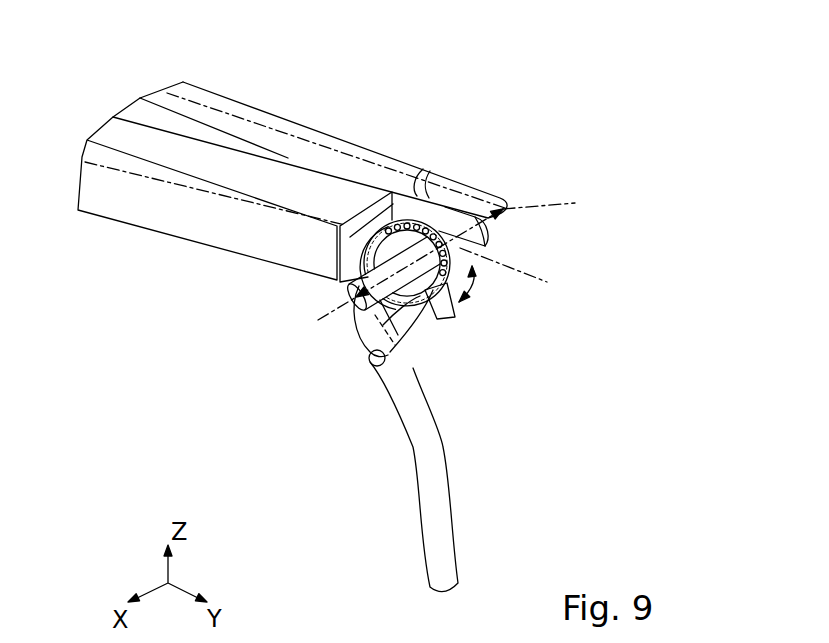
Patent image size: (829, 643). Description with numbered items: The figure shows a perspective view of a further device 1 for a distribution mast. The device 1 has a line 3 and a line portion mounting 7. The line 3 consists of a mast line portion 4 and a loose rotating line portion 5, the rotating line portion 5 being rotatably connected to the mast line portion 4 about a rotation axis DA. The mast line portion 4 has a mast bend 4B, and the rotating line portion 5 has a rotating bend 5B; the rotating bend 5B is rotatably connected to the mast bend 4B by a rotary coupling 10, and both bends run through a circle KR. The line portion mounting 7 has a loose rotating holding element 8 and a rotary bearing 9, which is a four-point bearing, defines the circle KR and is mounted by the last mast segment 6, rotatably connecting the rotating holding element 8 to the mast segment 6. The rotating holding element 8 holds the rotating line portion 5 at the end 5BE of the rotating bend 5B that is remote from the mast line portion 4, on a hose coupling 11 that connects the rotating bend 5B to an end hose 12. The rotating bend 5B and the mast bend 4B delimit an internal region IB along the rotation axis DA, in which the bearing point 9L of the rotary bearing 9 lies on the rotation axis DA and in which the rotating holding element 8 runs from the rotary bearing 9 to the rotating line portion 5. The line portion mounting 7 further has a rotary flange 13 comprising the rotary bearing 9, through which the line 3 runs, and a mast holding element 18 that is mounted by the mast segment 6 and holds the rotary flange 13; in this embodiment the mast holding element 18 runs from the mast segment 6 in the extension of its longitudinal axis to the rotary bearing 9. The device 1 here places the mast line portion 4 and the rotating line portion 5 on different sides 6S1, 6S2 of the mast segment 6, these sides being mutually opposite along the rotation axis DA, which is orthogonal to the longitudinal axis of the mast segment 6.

The device 1 is at (600, 129).
The line 3 is at (252, 121).
The mast line portion 4 is at (197, 99).
The mast bend 4B is at (501, 201).
The rotating line portion 5 is at (447, 530).
The rotating bend 5B is at (362, 322).
The end of the rotating bend 5BE is at (360, 378).
The mast segment 6 is at (147, 207).
The side of the mast segment 6S1 is at (195, 222).
The side of the mast segment 6S2 is at (279, 153).
The line portion mounting 7 is at (349, 245).
The rotating holding element 8 is at (440, 320).
The rotary bearing 9 is at (423, 222).
The bearing point 9L is at (425, 350).
The rotary coupling 10 is at (350, 295).
The hose coupling 11 is at (385, 378).
The hose 12 is at (448, 566).
The rotary flange 13 is at (457, 220).
The mast holding element 18 is at (353, 257).
The rotation axis DA is at (465, 255).
The internal region IB is at (487, 252).
The circle KR is at (458, 318).